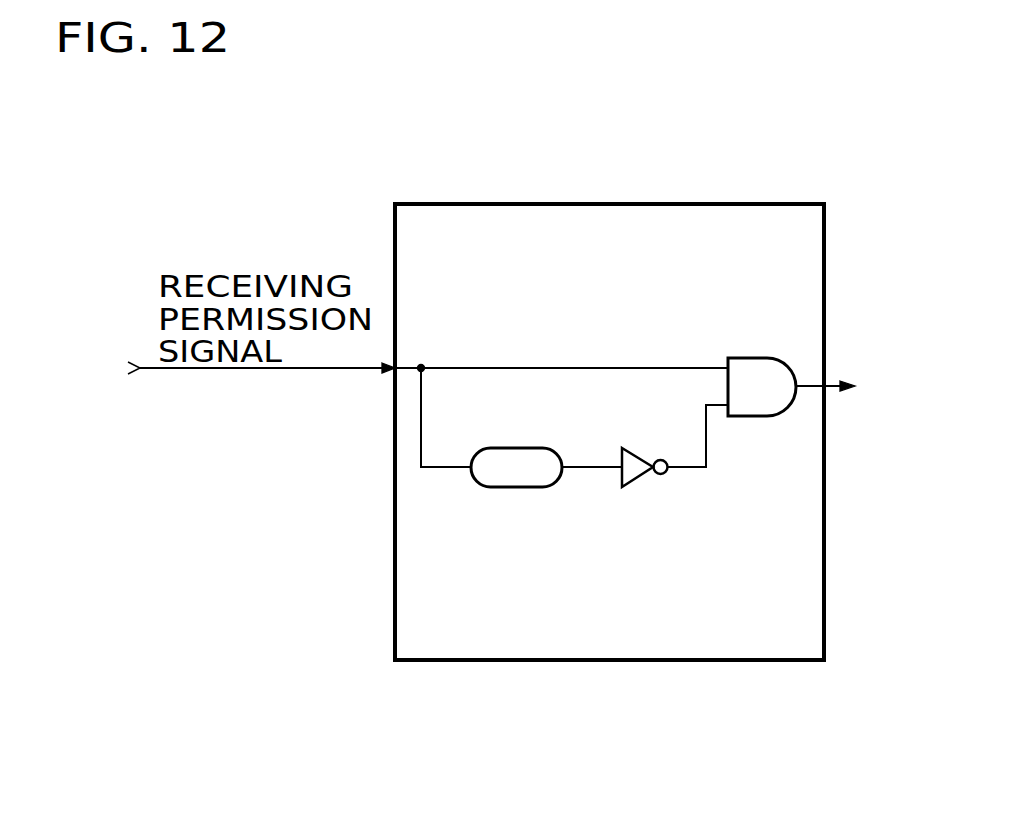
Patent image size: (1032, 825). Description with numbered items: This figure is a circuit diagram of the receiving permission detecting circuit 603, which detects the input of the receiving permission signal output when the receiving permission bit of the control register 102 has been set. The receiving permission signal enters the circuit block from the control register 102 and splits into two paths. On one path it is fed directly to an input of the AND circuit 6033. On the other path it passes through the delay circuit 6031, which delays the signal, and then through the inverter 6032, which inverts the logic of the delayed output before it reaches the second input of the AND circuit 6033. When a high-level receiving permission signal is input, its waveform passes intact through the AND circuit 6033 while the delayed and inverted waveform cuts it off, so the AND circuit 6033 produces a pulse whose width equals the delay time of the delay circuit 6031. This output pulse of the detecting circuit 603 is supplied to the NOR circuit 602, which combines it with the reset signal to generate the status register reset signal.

The control register 102 is at (124, 384).
The NOR circuit 602 is at (927, 402).
The receiving permission detecting circuit 603 is at (683, 203).
The delay circuit 6031 is at (494, 489).
The inverter 6032 is at (632, 478).
The AND circuit 6033 is at (750, 357).